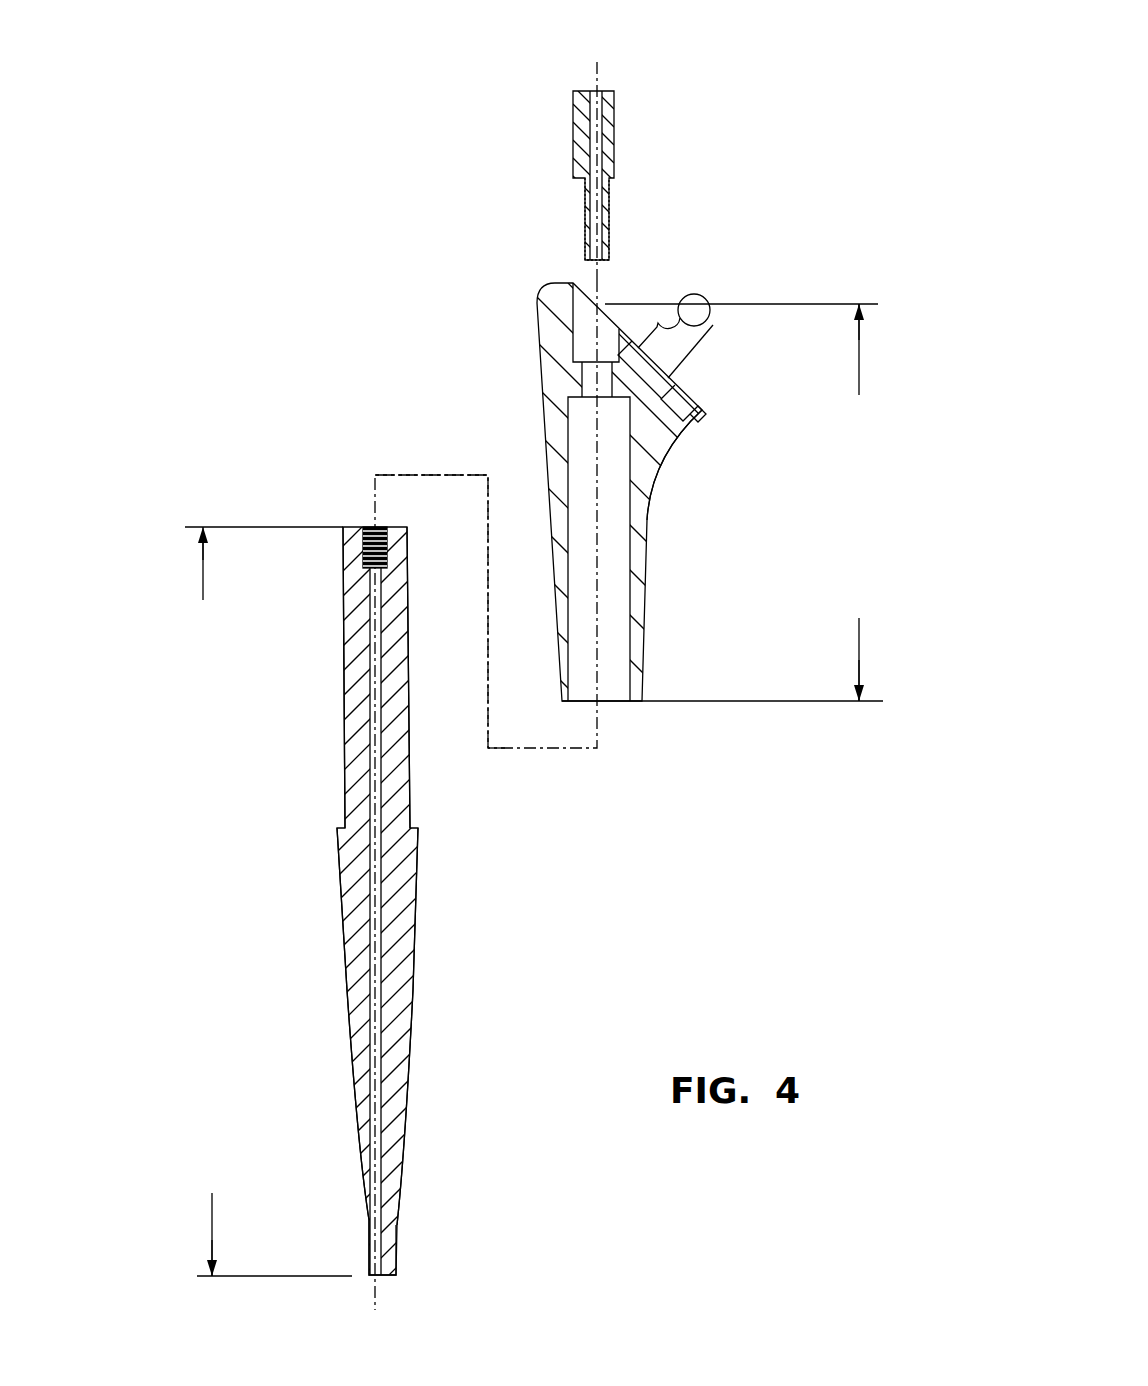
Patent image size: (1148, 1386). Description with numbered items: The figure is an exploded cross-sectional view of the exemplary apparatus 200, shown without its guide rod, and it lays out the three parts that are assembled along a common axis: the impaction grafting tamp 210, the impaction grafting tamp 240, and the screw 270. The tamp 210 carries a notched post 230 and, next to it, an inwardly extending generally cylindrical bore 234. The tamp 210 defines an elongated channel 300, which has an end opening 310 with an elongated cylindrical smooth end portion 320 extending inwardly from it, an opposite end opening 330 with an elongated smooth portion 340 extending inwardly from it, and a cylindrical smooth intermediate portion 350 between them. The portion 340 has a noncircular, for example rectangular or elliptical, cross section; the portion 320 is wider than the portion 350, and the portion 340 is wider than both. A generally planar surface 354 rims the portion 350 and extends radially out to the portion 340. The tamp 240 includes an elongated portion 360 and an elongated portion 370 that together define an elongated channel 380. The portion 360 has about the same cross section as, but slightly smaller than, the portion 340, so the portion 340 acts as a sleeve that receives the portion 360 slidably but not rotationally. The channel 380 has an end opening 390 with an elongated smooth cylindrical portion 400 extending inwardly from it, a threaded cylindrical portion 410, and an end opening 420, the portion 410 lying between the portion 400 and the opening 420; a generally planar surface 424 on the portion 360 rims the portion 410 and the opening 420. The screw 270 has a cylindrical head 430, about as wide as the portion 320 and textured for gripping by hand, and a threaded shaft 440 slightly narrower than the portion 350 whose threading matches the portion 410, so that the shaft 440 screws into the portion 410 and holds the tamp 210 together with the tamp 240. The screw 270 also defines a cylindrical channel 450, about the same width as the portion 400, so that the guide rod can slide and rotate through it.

The apparatus 200 is at (212, 120).
The impaction grafting tamp 210 is at (330, 355).
The impaction grafting tamp 240 is at (235, 1005).
The screw 270 is at (512, 115).
The notched post 230 is at (711, 322).
The generally cylindrical bore 234 is at (700, 388).
The elongated channel 300 is at (858, 643).
The end opening 310 is at (607, 302).
The elongated cylindrical smooth end portion 320 is at (598, 308).
The end opening 330 is at (608, 712).
The elongated smooth portion 340 is at (563, 443).
The cylindrical smooth intermediate portion 350 is at (583, 398).
The generally planar surface 354 is at (655, 475).
The elongated portion 360 is at (410, 795).
The elongated portion 370 is at (415, 1018).
The elongated channel 380 is at (212, 1213).
The end opening 390 is at (394, 1280).
The elongated smooth cylindrical portion 400 is at (363, 655).
The threaded cylindrical portion 410 is at (363, 547).
The end opening 420 is at (366, 521).
The generally planar surface 424 is at (395, 525).
The cylindrical head 430 is at (614, 120).
The threaded shaft 440 is at (609, 195).
The cylindrical channel 450 is at (600, 82).